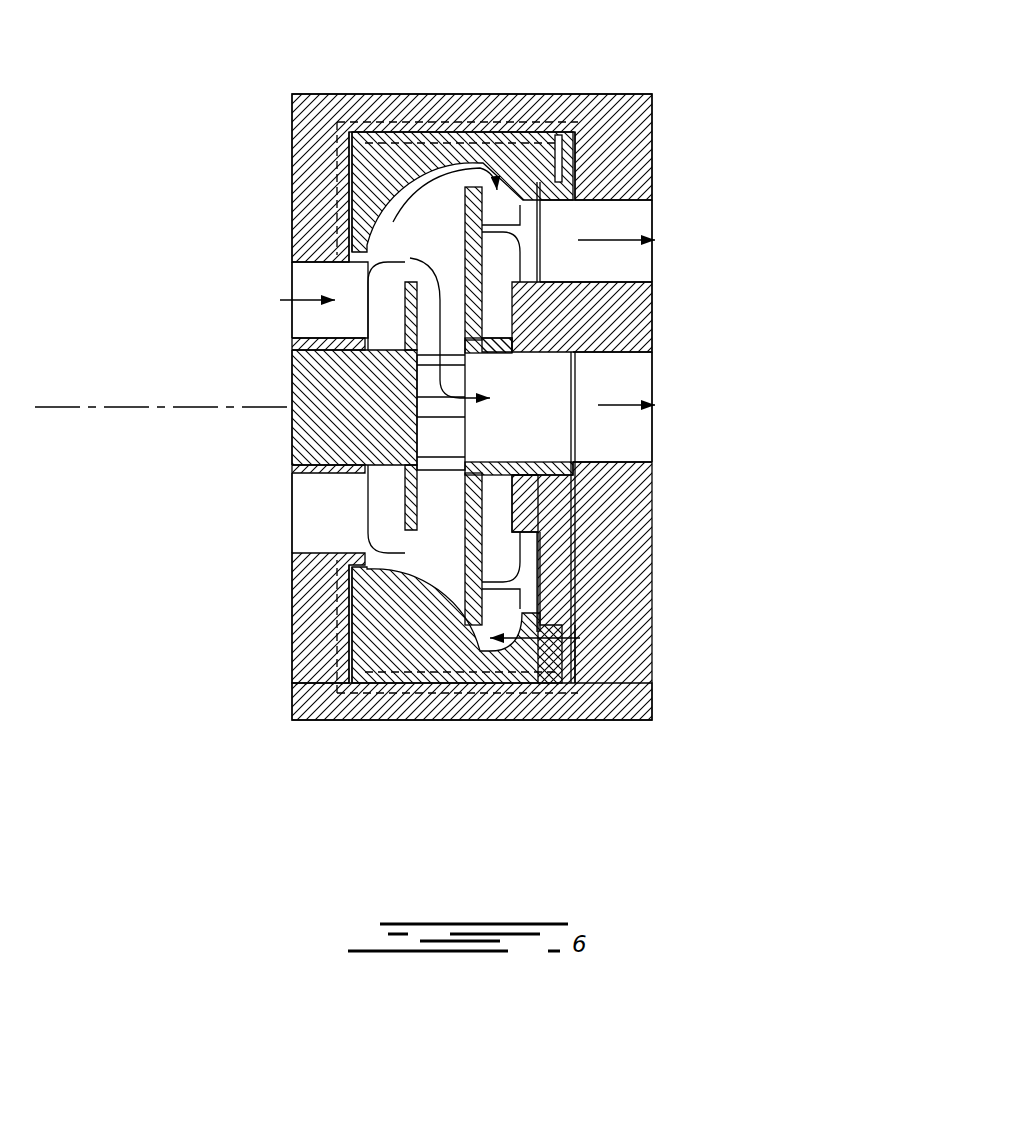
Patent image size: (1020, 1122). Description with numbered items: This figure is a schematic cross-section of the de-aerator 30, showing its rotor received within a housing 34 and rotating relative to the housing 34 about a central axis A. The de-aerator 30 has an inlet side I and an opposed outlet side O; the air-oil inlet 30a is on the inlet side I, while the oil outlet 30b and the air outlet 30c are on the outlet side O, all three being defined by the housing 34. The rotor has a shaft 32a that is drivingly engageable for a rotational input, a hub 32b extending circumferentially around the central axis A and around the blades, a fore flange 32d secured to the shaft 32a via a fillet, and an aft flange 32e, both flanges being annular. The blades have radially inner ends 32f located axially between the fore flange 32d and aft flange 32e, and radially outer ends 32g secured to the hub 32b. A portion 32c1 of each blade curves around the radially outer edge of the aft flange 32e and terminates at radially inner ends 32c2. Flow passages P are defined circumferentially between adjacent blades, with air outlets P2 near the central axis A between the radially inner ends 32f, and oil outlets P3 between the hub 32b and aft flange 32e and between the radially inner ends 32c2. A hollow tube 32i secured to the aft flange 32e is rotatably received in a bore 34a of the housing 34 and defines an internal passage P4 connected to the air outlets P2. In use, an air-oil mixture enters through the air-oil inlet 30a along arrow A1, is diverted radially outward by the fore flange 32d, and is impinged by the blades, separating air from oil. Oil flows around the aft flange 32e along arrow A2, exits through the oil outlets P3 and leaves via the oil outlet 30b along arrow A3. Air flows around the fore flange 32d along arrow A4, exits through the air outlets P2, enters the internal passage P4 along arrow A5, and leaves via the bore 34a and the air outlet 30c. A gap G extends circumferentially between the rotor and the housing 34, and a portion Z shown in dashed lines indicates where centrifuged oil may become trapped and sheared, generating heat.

The de-aerator 30 is at (745, 352).
The air-oil inlet 30a is at (290, 272).
The oil outlet 30b is at (655, 210).
The air outlet 30c is at (655, 440).
The shaft 32a is at (350, 405).
The hub 32b is at (395, 150).
The portion of the blades 32c1 is at (500, 583).
The radially inner ends of the portions of the blades 32c2 is at (500, 230).
The fore flange 32d is at (410, 495).
The aft flange 32e is at (460, 605).
The radially inner ends of the blades 32f is at (540, 480).
The radially outer ends of the blades 32g is at (476, 140).
The hollow tube 32i is at (535, 352).
The housing 34 is at (290, 680).
The bore 34a is at (532, 493).
The gap G is at (353, 128).
The portion where oil may be trapped Z is at (337, 150).
The central axis A is at (105, 409).
The arrow A1 is at (290, 318).
The arrow A2 is at (500, 180).
The arrow A3 is at (660, 240).
The arrow A4 is at (448, 298).
The arrow A5 is at (660, 405).
The outlet side O is at (852, 396).
The inlet side I is at (130, 605).
The flow passages P is at (445, 233).
The air outlets P2 is at (440, 435).
The oil outlets P3 is at (580, 638).
The internal passage P4 is at (542, 408).